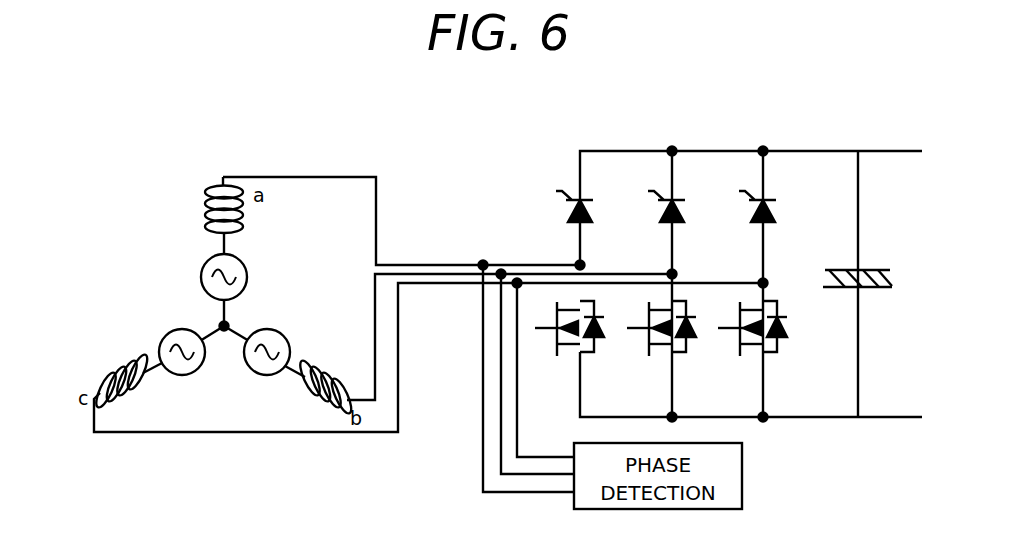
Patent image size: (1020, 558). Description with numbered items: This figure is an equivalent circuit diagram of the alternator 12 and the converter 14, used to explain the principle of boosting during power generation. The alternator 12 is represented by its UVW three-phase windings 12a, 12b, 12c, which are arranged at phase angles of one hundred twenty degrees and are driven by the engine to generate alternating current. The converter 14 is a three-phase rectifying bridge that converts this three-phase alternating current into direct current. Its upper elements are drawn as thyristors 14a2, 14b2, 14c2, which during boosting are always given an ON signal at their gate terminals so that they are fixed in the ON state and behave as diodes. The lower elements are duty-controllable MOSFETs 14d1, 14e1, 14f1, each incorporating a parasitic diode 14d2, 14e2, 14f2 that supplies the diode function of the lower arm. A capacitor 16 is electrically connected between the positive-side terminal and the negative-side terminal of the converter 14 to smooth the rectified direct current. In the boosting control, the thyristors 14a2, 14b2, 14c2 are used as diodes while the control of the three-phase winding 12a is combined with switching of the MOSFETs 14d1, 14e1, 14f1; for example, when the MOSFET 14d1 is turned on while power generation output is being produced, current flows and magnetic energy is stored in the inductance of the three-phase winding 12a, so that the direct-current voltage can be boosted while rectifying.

The alternator 12 is at (176, 280).
The three-phase winding 12a is at (205, 201).
The three-phase winding 12b is at (332, 370).
The three-phase winding 12c is at (143, 391).
The converter 14 is at (848, 118).
The thyristor 14a2 is at (585, 200).
The thyristor 14b2 is at (677, 200).
The thyristor 14c2 is at (768, 200).
The MOSFET 14d1 is at (568, 350).
The parasitic diode 14d2 is at (615, 364).
The MOSFET 14e1 is at (663, 352).
The parasitic diode 14e2 is at (707, 364).
The MOSFET 14f1 is at (749, 347).
The parasitic diode 14f2 is at (798, 364).
The capacitor 16 is at (882, 269).